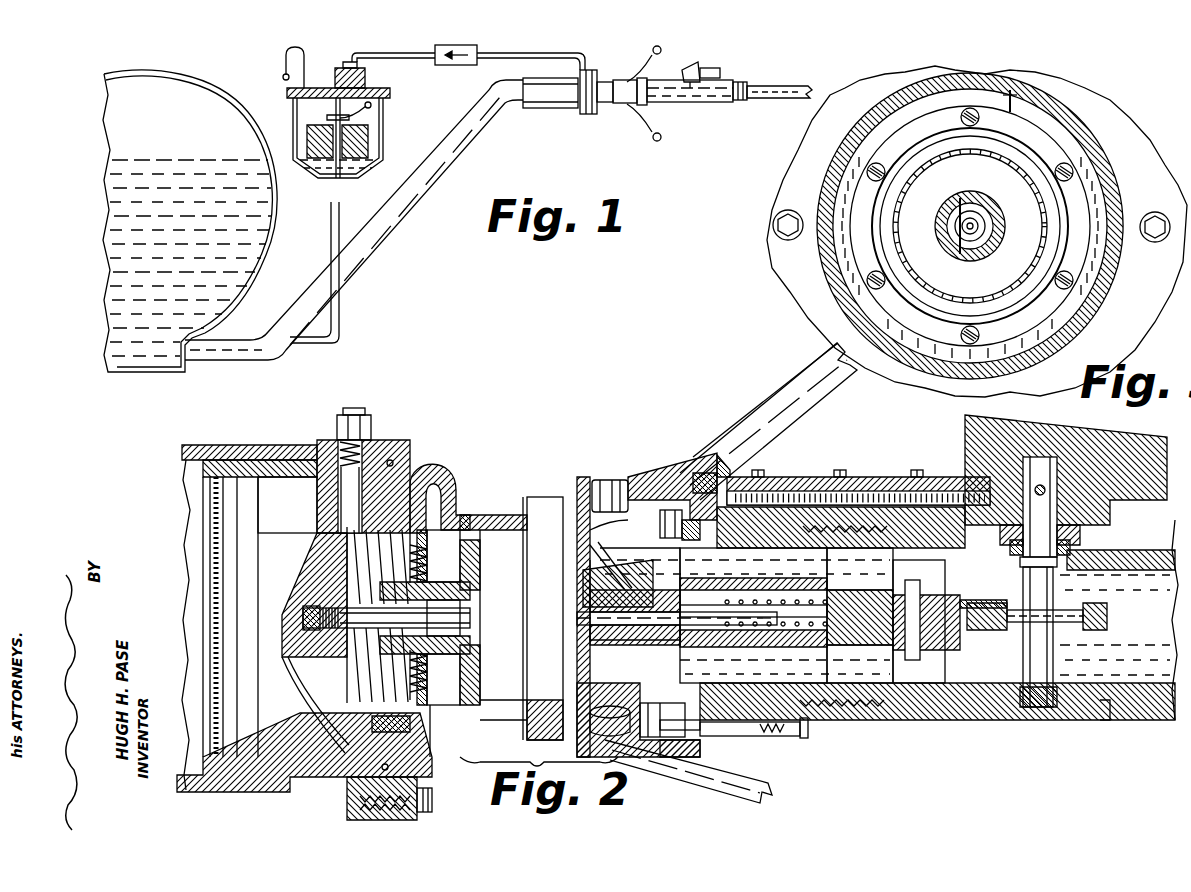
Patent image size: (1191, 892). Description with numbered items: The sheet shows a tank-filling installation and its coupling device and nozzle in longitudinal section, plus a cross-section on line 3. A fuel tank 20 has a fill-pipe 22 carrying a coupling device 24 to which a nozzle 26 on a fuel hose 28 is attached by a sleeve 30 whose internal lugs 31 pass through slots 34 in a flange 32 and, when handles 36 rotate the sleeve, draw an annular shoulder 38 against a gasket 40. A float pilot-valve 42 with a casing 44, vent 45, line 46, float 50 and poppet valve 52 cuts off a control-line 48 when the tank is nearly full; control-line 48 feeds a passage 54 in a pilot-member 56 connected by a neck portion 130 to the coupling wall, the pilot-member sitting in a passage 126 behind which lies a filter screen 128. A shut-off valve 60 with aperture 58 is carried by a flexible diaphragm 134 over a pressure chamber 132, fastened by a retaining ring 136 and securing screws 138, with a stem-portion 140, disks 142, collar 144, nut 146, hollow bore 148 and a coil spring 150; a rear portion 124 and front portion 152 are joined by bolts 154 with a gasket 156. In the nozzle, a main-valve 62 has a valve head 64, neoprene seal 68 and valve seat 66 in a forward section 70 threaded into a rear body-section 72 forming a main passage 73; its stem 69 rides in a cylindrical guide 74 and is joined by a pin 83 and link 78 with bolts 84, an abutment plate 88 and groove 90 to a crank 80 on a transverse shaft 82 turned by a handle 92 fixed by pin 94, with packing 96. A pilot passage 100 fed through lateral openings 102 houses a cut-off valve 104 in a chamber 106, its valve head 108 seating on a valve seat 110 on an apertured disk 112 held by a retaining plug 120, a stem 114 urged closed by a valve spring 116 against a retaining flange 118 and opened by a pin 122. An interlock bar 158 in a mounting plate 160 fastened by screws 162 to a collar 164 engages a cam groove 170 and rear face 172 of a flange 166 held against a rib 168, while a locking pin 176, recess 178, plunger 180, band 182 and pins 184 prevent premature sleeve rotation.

In FIG. 2, the section line 3— 3 is at (414, 453).
In FIG. 1, the fuel tank 20 is at (201, 79).
In FIG. 1, the fill-pipe 22 is at (411, 198).
In FIG. 2, the fill-pipe 22 is at (190, 497).
In FIG. 1, the coupling device 24 is at (598, 112).
In FIG. 3, the coupling device 24 is at (775, 247).
In FIG. 2, the coupling device 24 is at (398, 440).
In FIG. 1, the nozzle 26 is at (675, 102).
In FIG. 2, the nozzle 26 is at (933, 722).
In FIG. 1, the fuel hose 28 is at (770, 100).
In FIG. 1, the sleeve 30 is at (622, 80).
In FIG. 2, the sleeve 30 is at (655, 478).
In FIG. 2, the internal lugs 31 is at (583, 490).
In FIG. 2, the flange 32 is at (539, 771).
In FIG. 2, the slots 34 is at (542, 518).
In FIG. 2, the handles 36 is at (795, 395).
In FIG. 2, the annular shoulder 38 is at (625, 535).
In FIG. 2, the gasket 40 is at (515, 563).
In FIG. 1, the float type pilot-valve 42 is at (394, 93).
In FIG. 1, the casing 44 is at (385, 140).
In FIG. 1, the vent 45 is at (286, 64).
In FIG. 1, the line 46 is at (341, 297).
In FIG. 1, the control-line 48 is at (488, 62).
In FIG. 2, the control-line 48 is at (362, 418).
In FIG. 1, the float 50 is at (303, 133).
In FIG. 1, the poppet valve 52 is at (366, 80).
In FIG. 2, the passage 54 is at (345, 495).
In FIG. 3, the pilot-member 56 is at (870, 159).
In FIG. 2, the pilot-member 56 is at (313, 664).
In FIG. 2, the aperture 58 is at (480, 639).
In FIG. 2, the shut-off valve 60 is at (488, 512).
In FIG. 2, the main-valve 62 is at (640, 628).
In FIG. 2, the valve head 64 is at (622, 598).
In FIG. 2, the valve seat 66 is at (612, 570).
In FIG. 2, the neoprene seal 68 is at (603, 691).
In FIG. 2, the stem 69 is at (708, 595).
In FIG. 2, the forward section 70 is at (793, 505).
In FIG. 2, the rear body-section 72 is at (1105, 712).
In FIG. 2, the main passage 73 is at (882, 720).
In FIG. 2, the cylindrical guide 74 is at (793, 676).
In FIG. 2, the link 78 is at (982, 600).
In FIG. 2, the crank 80 is at (1057, 648).
In FIG. 2, the transverse shaft 82 is at (1060, 512).
In FIG. 2, the pin 83 is at (956, 578).
In FIG. 2, the bolts 84 is at (1007, 625).
In FIG. 2, the abutment plate 88 is at (1097, 604).
In FIG. 2, the circumferential groove 90 is at (1068, 600).
In FIG. 1, the handle 92 is at (704, 63).
In FIG. 2, the handle 92 is at (1072, 438).
In FIG. 2, the pin 94 is at (1045, 490).
In FIG. 2, the packing 96 is at (1100, 545).
In FIG. 2, the pilot passage 100 is at (753, 617).
In FIG. 2, the lateral openings 102 is at (900, 590).
In FIG. 2, the cut-off valve 104 is at (808, 600).
In FIG. 2, the chamber 106 is at (879, 675).
In FIG. 2, the valve head 108 is at (860, 617).
In FIG. 2, the valve seat 110 is at (860, 569).
In FIG. 2, the apertured disk 112 is at (860, 664).
In FIG. 2, the stem 114 is at (638, 627).
In FIG. 2, the valve spring 116 is at (762, 600).
In FIG. 2, the retaining flange 118 is at (707, 676).
In FIG. 2, the valve-seat retaining plug 120 is at (926, 613).
In FIG. 3, the pin 122 is at (982, 226).
In FIG. 2, the pin 122 is at (315, 600).
In FIG. 2, the rear portion 124 is at (332, 778).
In FIG. 3, the passage 126 is at (888, 112).
In FIG. 2, the passage 126 is at (275, 462).
In FIG. 2, the filter screen 128 is at (232, 658).
In FIG. 3, the neck portion 130 is at (1014, 96).
In FIG. 2, the neck portion 130 is at (386, 488).
In FIG. 2, the pressure chamber 132 is at (458, 520).
In FIG. 3, the flexible diaphragm 134 is at (1006, 297).
In FIG. 2, the flexible diaphragm 134 is at (445, 705).
In FIG. 3, the retaining ring 136 is at (1080, 259).
In FIG. 2, the retaining ring 136 is at (415, 733).
In FIG. 3, the securing screws 138 is at (1074, 170).
In FIG. 2, the securing screws 138 is at (380, 724).
In FIG. 3, the stem-portion 140 is at (980, 210).
In FIG. 2, the stem-portion 140 is at (440, 617).
In FIG. 3, the disks 142 is at (988, 180).
In FIG. 2, the disks 142 is at (393, 624).
In FIG. 3, the collar 144 is at (946, 232).
In FIG. 2, the collar 144 is at (425, 621).
In FIG. 2, the nut 146 is at (345, 628).
In FIG. 3, the hollow bore 148 is at (990, 242).
In FIG. 2, the hollow bore 148 is at (465, 596).
In FIG. 2, the coil spring 150 is at (350, 547).
In FIG. 3, the front portion 152 is at (1092, 303).
In FIG. 2, the front portion 152 is at (445, 758).
In FIG. 3, the bolts 154 is at (792, 210).
In FIG. 2, the bolts 154 is at (432, 804).
In FIG. 2, the gasket 156 is at (383, 763).
In FIG. 2, the interlock bar 158 is at (862, 490).
In FIG. 2, the mounting plate 160 is at (840, 470).
In FIG. 2, the screws 162 is at (775, 465).
In FIG. 2, the collar 164 is at (804, 740).
In FIG. 2, the flange 166 is at (727, 470).
In FIG. 2, the circumferential rib 168 is at (700, 540).
In FIG. 2, the cam groove 170 is at (980, 484).
In FIG. 2, the rear face 172 is at (841, 528).
In FIG. 2, the locking pin 176 is at (742, 740).
In FIG. 2, the recess 178 is at (705, 750).
In FIG. 2, the plunger 180 is at (690, 715).
In FIG. 2, the metal band 182 is at (668, 522).
In FIG. 2, the pins 184 is at (700, 487).